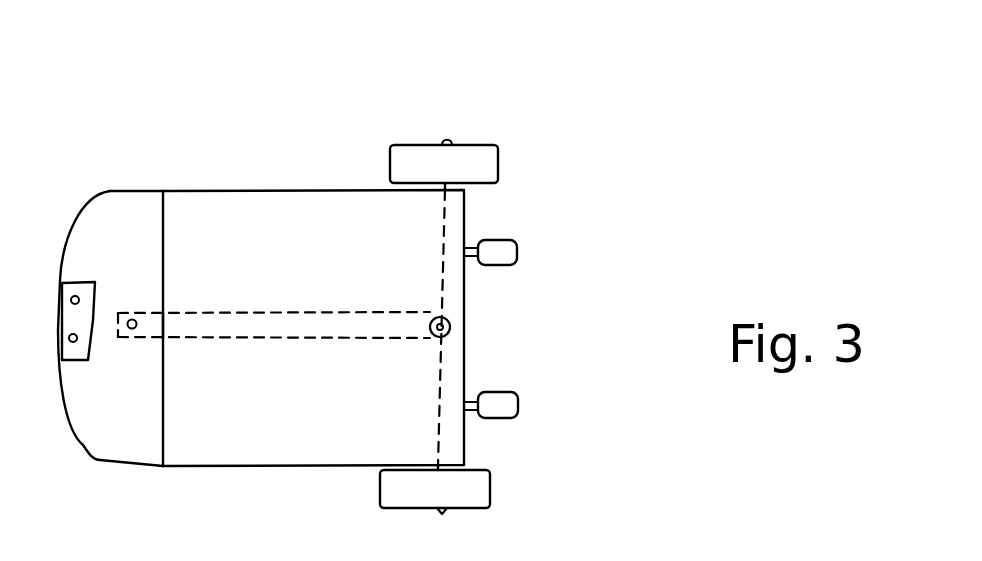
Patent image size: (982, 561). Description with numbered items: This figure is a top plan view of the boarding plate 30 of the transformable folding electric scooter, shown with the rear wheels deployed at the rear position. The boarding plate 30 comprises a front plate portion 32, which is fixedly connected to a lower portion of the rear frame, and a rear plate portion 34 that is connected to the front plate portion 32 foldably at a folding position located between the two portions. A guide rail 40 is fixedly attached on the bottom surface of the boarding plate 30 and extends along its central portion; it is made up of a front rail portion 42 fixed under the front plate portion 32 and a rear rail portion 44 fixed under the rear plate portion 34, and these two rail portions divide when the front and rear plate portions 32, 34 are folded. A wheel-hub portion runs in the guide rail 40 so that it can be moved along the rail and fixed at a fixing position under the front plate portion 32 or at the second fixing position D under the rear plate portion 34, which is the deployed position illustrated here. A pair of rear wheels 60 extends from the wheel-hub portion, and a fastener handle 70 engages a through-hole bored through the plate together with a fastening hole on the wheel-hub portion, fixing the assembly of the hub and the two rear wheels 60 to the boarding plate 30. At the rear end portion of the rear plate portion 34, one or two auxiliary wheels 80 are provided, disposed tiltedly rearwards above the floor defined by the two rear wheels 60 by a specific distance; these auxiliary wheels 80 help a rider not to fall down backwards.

The boarding plate 30 is at (571, 50).
The front plate portion 32 is at (133, 198).
The rear plate portion 34 is at (225, 200).
The guide rail 40 is at (260, 340).
The front rail portion 42 is at (146, 333).
The rear rail portion 44 is at (182, 340).
The rear wheels 60 is at (500, 148).
The fastener handle 70 is at (450, 322).
The auxiliary wheels 80 is at (518, 245).
The second fixing position D is at (450, 115).